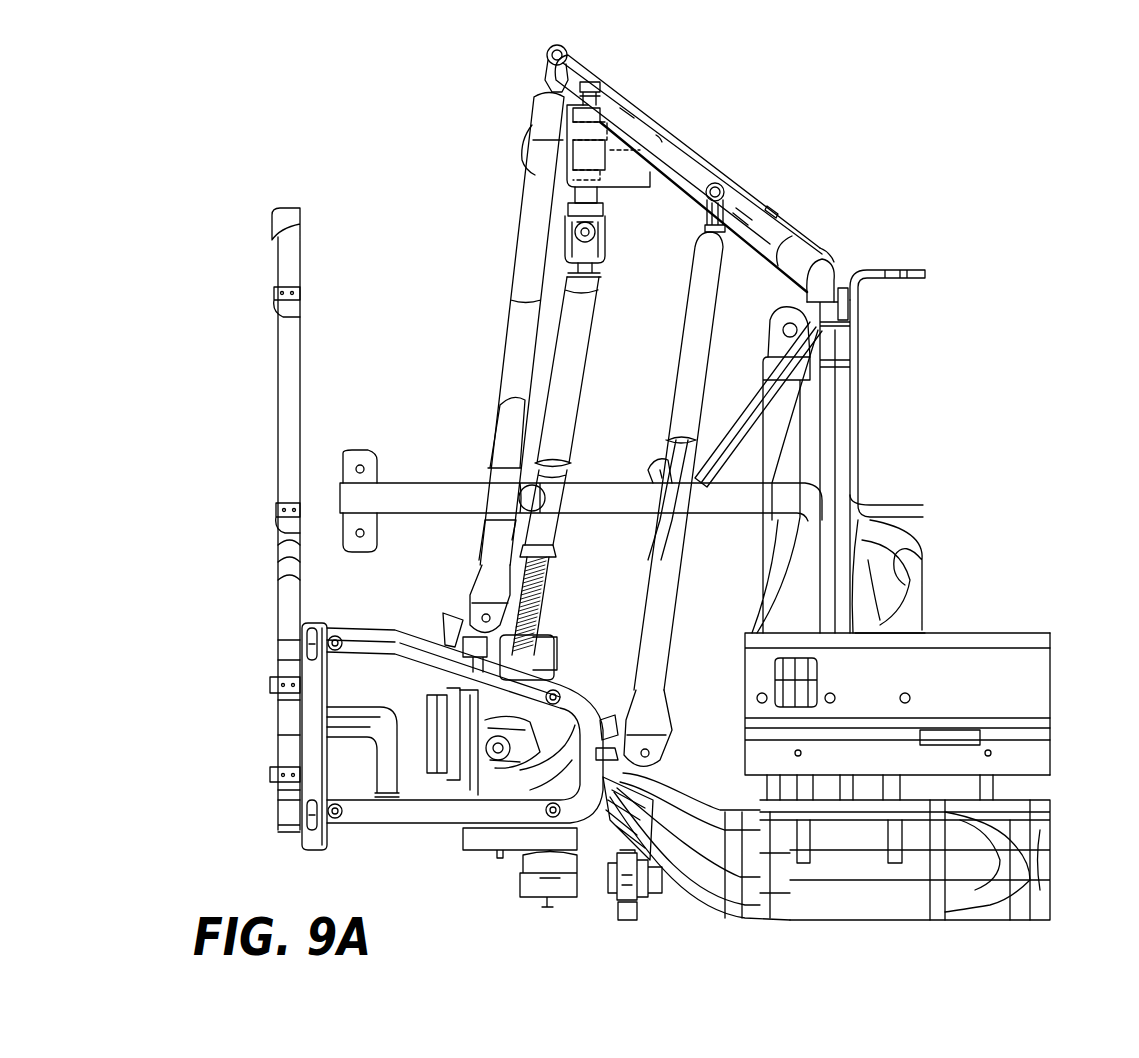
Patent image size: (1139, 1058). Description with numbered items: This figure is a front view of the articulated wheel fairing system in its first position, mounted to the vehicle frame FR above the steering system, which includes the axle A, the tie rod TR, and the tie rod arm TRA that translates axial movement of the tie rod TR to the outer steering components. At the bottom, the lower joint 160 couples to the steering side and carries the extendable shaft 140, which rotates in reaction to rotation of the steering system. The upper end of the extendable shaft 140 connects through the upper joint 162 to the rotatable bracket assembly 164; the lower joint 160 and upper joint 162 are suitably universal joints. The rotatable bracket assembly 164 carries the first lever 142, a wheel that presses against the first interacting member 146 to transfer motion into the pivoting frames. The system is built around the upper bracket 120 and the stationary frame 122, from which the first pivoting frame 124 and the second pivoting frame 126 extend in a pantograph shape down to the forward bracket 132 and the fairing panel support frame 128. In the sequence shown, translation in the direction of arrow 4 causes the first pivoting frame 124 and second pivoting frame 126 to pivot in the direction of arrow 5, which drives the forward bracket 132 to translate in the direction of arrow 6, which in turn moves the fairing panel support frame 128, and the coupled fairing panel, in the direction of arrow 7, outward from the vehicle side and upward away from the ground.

The arrow 4 is at (577, 172).
The arrow 5 is at (488, 322).
The arrow 6 is at (356, 845).
The arrow 7 is at (246, 589).
The upper bracket 120 is at (690, 166).
The stationary frame 122 is at (808, 258).
The first pivoting frame 124 is at (692, 334).
The second pivoting frame 126 is at (522, 292).
The fairing panel support frame 128 is at (282, 356).
The forward bracket 132 is at (390, 630).
The extendable shaft 140 is at (553, 535).
The first lever 142 is at (640, 128).
The first interacting member 146 is at (530, 139).
The lower joint 160 is at (482, 780).
The upper joint 162 is at (563, 226).
The rotatable bracket assembly 164 is at (598, 90).
The frame FR is at (907, 270).
The tie rod TR is at (670, 892).
The tie rod arm TRA is at (575, 840).
The axle A is at (900, 905).